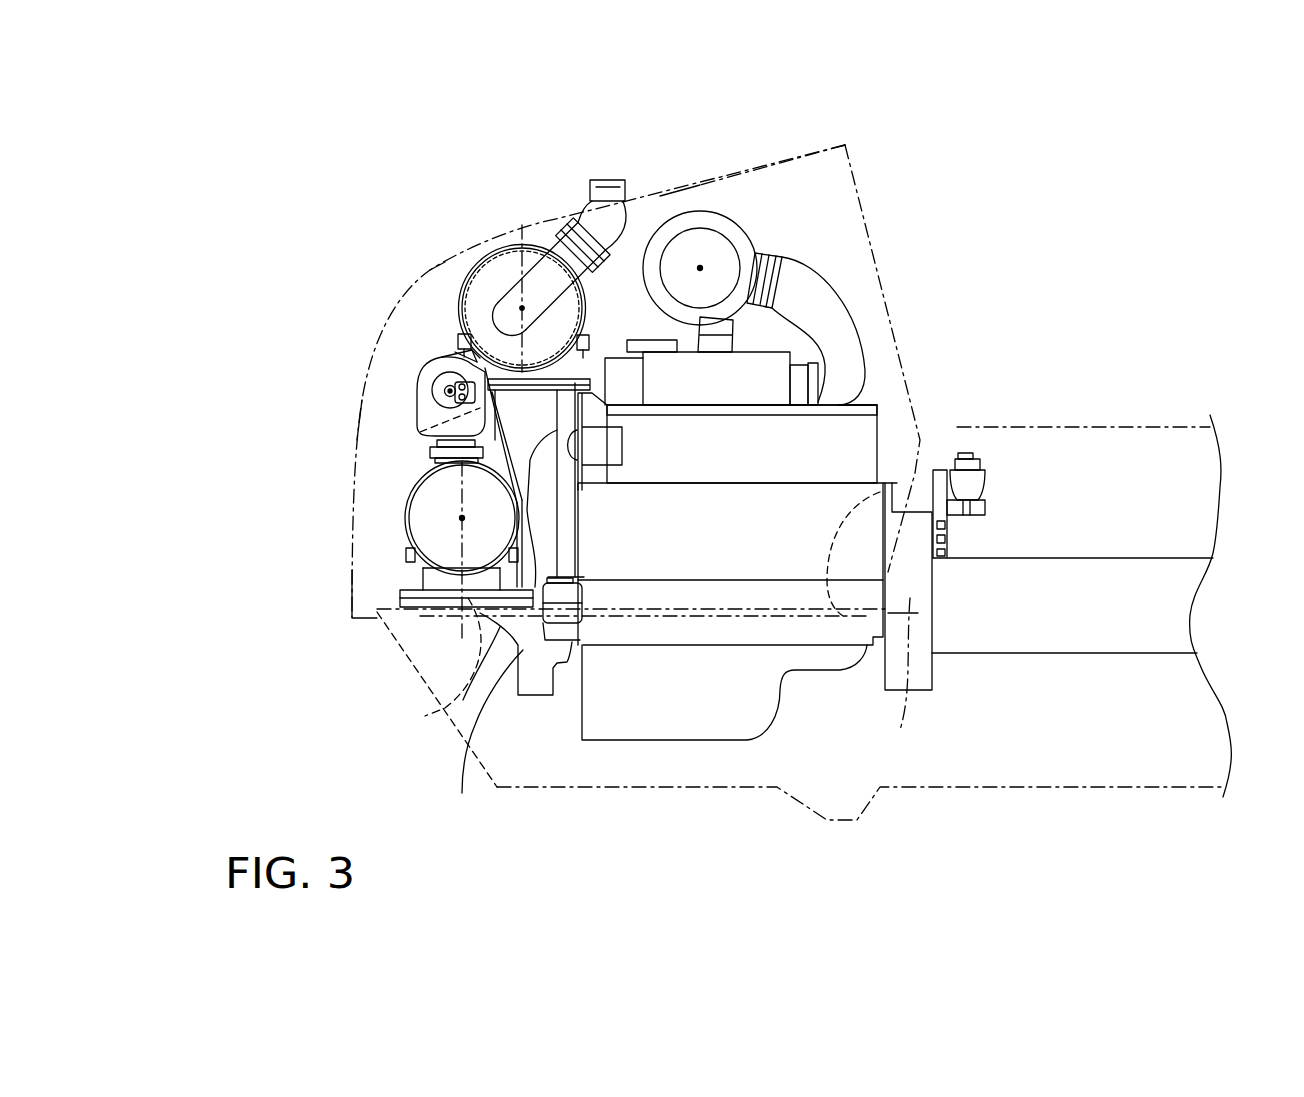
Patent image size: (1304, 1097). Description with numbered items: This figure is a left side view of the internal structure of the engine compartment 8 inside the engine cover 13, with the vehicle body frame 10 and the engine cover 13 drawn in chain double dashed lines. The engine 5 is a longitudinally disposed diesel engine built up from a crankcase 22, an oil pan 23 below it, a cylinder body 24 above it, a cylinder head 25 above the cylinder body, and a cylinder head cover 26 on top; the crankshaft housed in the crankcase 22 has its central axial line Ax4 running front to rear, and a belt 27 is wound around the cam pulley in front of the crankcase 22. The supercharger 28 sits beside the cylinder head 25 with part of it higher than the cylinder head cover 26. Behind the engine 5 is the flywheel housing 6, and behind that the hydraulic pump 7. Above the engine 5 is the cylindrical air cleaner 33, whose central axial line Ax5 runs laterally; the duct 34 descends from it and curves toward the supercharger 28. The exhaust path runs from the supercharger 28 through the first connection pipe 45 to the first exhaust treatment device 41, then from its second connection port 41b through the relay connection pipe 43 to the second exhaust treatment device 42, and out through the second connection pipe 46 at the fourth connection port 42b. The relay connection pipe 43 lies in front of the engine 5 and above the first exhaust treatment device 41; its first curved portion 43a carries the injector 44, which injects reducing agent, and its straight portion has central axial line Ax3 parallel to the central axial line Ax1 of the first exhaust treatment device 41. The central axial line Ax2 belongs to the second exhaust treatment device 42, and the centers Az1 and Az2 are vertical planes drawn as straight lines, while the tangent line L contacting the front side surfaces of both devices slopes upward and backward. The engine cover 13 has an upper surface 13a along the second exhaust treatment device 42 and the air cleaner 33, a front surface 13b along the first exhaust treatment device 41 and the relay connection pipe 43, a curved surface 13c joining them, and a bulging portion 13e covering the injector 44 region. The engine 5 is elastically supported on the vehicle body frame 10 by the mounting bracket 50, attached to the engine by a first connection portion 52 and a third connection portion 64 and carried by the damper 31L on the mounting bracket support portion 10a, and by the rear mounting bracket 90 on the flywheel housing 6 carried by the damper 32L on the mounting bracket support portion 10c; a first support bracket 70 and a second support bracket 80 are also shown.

The engine 5 is at (859, 405).
The flywheel housing 6 is at (922, 680).
The hydraulic pump 7 is at (1108, 575).
The engine compartment 8 is at (805, 190).
The vehicle body frame 10 is at (1112, 425).
The mounting bracket support portion 10a is at (563, 603).
The mounting bracket support portion 10c is at (985, 507).
The engine cover 13 is at (852, 170).
The upper surface 13a is at (713, 172).
The front surface 13b is at (358, 372).
The curved surface 13c is at (440, 257).
The bulging portion 13e is at (418, 438).
The crankcase 22 is at (785, 632).
The oil pan 23 is at (730, 717).
The cylinder body 24 is at (803, 537).
The cylinder head 25 is at (860, 447).
The cylinder head cover 26 is at (873, 412).
The belt 27 is at (568, 510).
The supercharger 28 is at (657, 367).
The damper 31L is at (500, 787).
The damper 32L is at (985, 472).
The air cleaner 33 is at (703, 220).
The duct 34 is at (813, 272).
The first exhaust treatment device 41 is at (385, 580).
The second connection port 41b is at (433, 458).
The second exhaust treatment device 42 is at (497, 277).
The fourth connection port 42b is at (568, 247).
The relay connection pipe 43 is at (432, 407).
The first curved portion 43a is at (437, 442).
The injector 44 is at (443, 390).
The first connection pipe 45 is at (598, 358).
The second connection pipe 46 is at (562, 233).
The mounting bracket 50 is at (472, 732).
The first connection portion 52 is at (585, 645).
The third connection portion 64 is at (593, 478).
The first support bracket 70 is at (452, 572).
The second support bracket 80 is at (457, 348).
The rear mounting bracket 90 is at (945, 470).
The central axial line Ax1 is at (460, 518).
The central axial line Ax2 is at (521, 305).
The central axial line Ax3 is at (448, 389).
The central axial line Ax4 is at (919, 680).
The central axial line Ax5 is at (702, 268).
The center Az1 is at (432, 698).
The center Az2 is at (523, 237).
The tangent line L is at (350, 596).